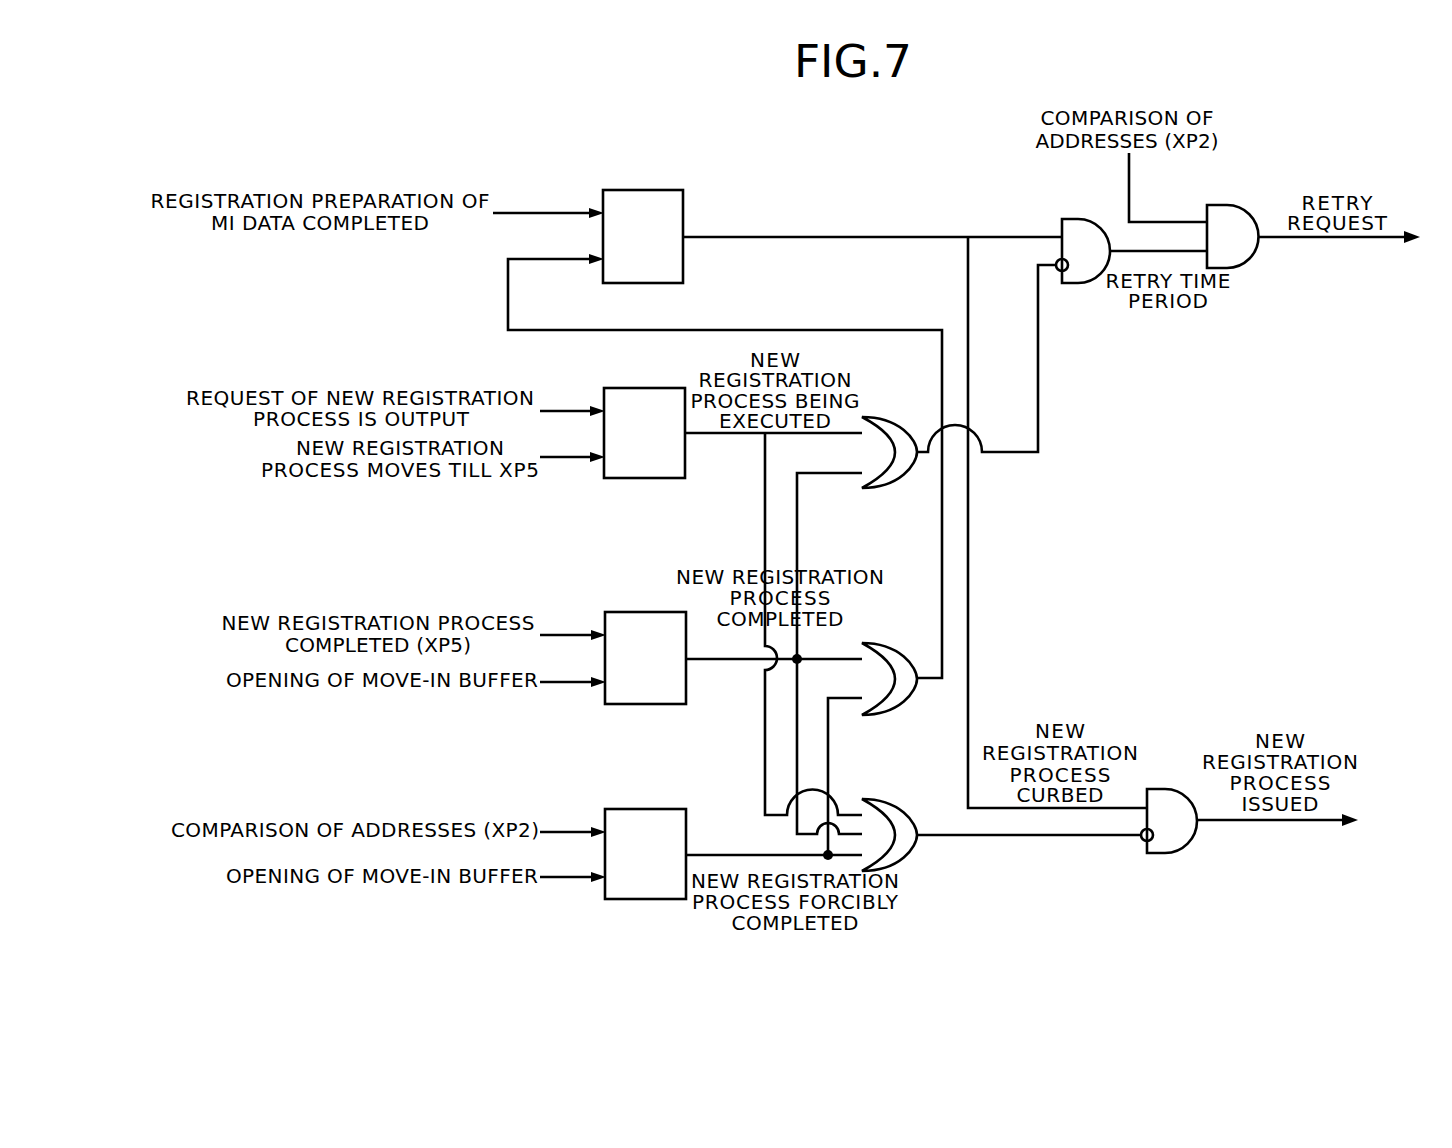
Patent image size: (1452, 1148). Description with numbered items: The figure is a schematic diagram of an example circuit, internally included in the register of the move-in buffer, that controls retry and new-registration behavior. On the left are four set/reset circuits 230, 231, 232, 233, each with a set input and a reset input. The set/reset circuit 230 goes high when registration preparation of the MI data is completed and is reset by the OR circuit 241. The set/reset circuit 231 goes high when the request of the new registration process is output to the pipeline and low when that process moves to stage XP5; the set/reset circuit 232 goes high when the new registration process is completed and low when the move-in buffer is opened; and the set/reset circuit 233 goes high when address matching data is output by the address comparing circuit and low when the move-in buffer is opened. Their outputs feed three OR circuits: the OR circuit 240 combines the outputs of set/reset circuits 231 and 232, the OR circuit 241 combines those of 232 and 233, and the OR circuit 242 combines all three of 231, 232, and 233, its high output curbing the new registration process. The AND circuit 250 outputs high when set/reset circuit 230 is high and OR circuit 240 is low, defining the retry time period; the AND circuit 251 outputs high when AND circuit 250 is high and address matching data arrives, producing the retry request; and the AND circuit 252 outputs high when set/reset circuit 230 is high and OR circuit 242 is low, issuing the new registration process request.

The set/reset circuit 230 is at (641, 190).
The set/reset circuit 231 is at (642, 388).
The set/reset circuit 232 is at (643, 612).
The set/reset circuit 233 is at (643, 809).
The OR circuit 240 is at (866, 418).
The OR circuit 241 is at (866, 645).
The OR circuit 242 is at (866, 801).
The AND circuit 250 is at (1077, 219).
The AND circuit 251 is at (1225, 205).
The AND circuit 252 is at (1170, 853).